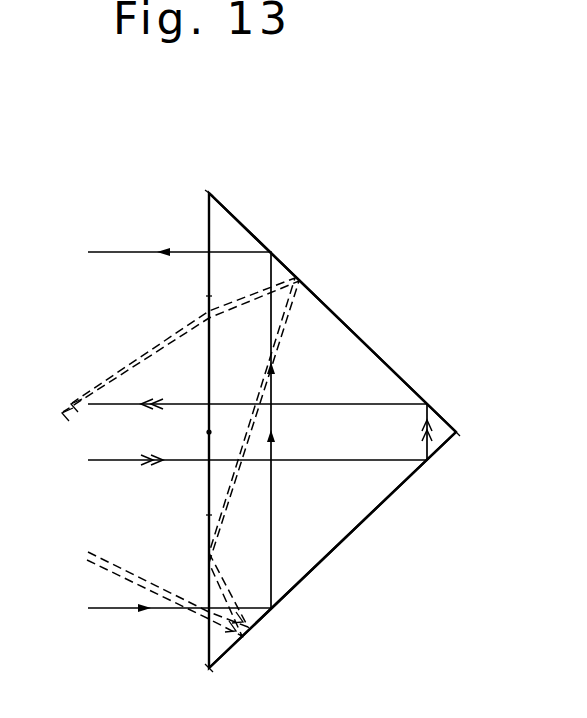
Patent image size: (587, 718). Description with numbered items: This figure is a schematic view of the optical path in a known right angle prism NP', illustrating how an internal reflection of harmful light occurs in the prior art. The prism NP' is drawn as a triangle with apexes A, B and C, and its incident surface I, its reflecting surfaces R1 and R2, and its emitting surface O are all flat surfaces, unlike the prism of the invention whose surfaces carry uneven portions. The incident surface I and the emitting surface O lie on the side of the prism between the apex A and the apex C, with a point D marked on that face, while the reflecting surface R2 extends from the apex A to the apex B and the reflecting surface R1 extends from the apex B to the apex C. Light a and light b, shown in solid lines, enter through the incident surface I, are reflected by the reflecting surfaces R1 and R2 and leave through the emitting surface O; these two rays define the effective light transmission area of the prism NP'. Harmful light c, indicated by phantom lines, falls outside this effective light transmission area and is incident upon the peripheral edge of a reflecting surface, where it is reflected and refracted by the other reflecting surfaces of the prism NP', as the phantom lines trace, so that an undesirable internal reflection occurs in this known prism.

The right angle prism NP' is at (371, 430).
The apex A is at (207, 177).
The apex B is at (468, 437).
The apex C is at (202, 683).
The center point D of entrance face D is at (194, 434).
The reflecting surface R1 is at (380, 505).
The reflecting surface R2 is at (363, 338).
The light a is at (108, 404).
The light b is at (105, 252).
The harmful light c is at (114, 556).
The emitting surface O is at (209, 296).
The incident surface I is at (209, 515).